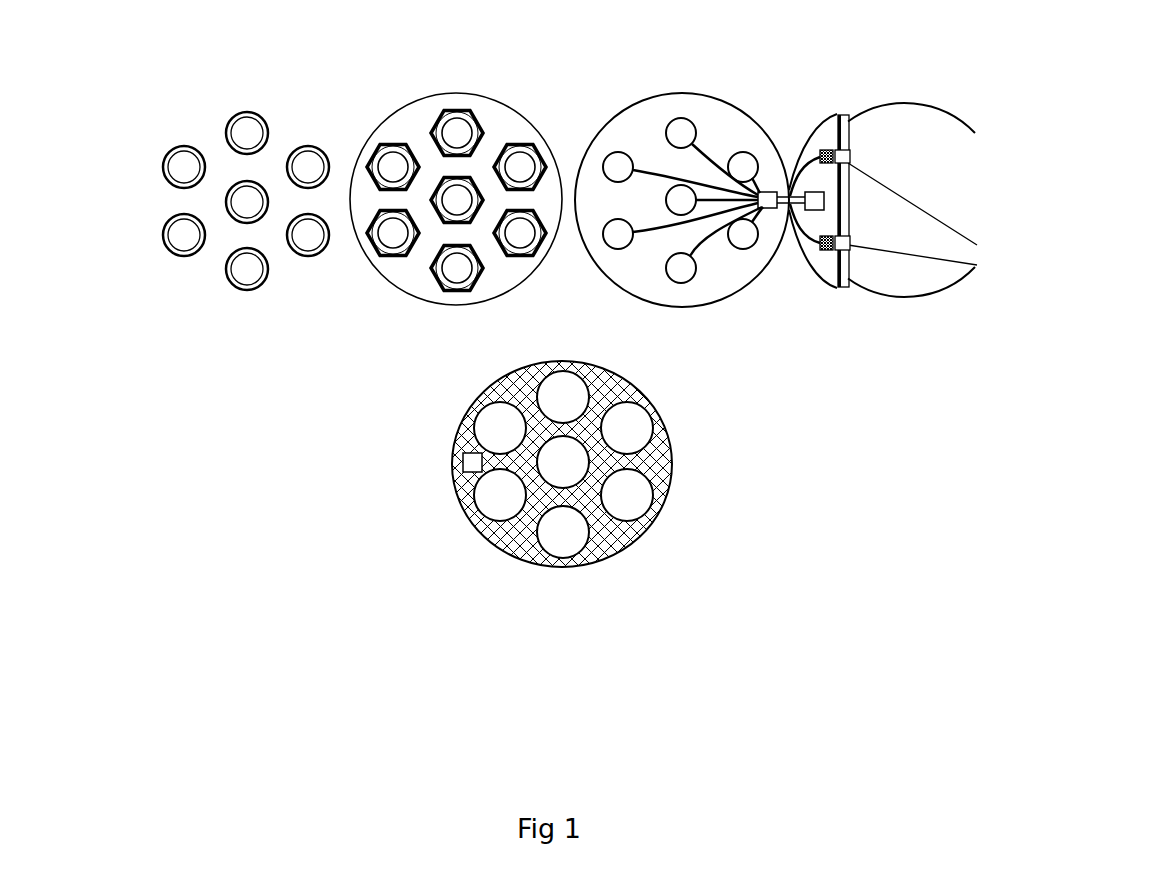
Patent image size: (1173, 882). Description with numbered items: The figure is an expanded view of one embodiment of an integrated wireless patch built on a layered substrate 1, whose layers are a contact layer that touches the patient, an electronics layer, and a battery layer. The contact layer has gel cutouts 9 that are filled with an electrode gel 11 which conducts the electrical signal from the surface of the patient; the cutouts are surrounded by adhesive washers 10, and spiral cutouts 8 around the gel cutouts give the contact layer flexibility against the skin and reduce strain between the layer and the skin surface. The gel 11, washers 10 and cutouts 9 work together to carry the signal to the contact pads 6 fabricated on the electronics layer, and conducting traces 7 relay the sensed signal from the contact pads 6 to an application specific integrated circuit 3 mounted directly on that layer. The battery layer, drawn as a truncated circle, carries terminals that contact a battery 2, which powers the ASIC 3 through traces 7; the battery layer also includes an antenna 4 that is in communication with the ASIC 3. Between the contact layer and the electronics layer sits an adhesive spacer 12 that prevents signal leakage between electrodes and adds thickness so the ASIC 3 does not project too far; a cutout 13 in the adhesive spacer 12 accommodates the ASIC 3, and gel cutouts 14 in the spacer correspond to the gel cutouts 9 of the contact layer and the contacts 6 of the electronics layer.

The substrate 1 is at (679, 228).
The battery 2 is at (883, 196).
The application specific integrated circuit (ASIC) 3 is at (775, 193).
The antenna 4 is at (840, 240).
The contact pad 6 is at (681, 268).
The conducting trace 7 is at (702, 247).
The spiral cutout 8 is at (513, 256).
The gel cutout 9 is at (442, 238).
The adhesive washer 10 is at (212, 199).
The electrode gel 11 is at (182, 236).
The adhesive spacer 12 is at (543, 502).
The cutout 13 is at (463, 468).
The gel cutout 14 is at (567, 532).